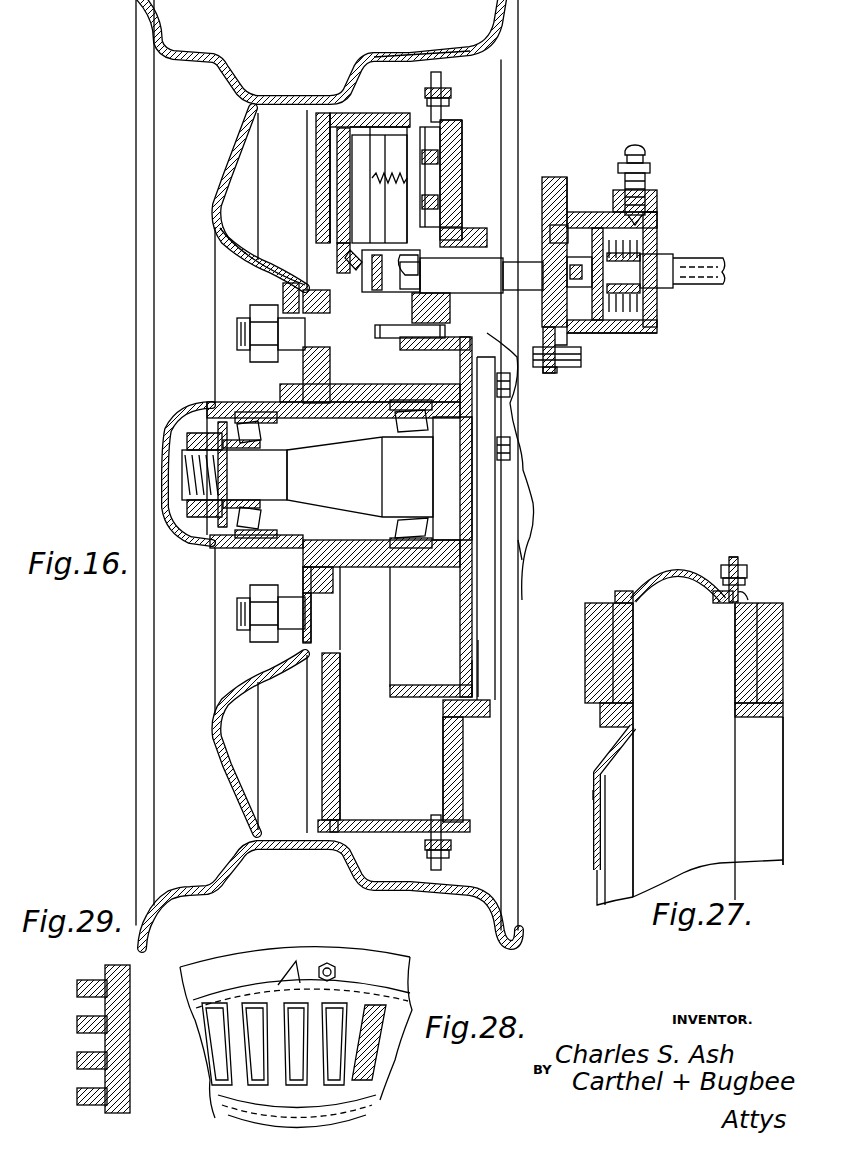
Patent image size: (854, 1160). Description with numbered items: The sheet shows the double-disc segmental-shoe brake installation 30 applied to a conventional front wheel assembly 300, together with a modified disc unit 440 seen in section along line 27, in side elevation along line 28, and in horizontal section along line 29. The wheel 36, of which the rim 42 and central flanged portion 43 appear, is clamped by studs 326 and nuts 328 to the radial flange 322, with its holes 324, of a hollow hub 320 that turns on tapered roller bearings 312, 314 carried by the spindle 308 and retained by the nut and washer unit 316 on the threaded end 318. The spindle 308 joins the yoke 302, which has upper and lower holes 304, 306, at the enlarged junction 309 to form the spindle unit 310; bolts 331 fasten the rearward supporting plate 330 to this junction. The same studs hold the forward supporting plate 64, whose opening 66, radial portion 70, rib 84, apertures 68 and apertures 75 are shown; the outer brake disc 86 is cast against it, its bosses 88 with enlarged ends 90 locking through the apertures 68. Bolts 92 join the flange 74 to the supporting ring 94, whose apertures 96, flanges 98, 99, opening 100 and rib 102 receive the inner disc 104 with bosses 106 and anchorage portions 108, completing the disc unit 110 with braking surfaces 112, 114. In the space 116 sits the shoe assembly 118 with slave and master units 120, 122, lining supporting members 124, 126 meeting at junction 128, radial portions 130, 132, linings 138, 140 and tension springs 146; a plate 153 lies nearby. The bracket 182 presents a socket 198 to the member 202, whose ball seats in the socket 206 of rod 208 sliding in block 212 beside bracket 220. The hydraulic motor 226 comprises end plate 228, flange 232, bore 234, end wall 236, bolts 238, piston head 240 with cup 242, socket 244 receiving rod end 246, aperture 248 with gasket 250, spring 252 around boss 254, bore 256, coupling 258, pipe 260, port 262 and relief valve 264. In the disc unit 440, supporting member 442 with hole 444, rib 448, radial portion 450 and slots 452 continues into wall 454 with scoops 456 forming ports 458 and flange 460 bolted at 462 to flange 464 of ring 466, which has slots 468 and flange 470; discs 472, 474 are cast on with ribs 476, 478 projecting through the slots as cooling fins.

In FIG. 16, the double-disc segmental-shoe vehicle brake installation 30 is at (475, 135).
In FIG. 16, the vehicle wheel 36 is at (221, 183).
In FIG. 16, the rim 42 is at (214, 55).
In FIG. 16, the central flanged apertured portion 43 is at (272, 402).
In FIG. 16, the brake disc supporting plate 64 is at (289, 298).
In FIG. 16, the central opening 66 is at (237, 400).
In FIG. 16, the brake disc securing apertures 68 is at (317, 157).
In FIG. 16, the radial portion 70 is at (318, 190).
In FIG. 16, the radial flange 74 is at (432, 80).
In FIG. 16, the apertures 75 is at (346, 124).
In FIG. 16, the indentation rib 84 is at (258, 268).
In FIG. 16, the outer annular brake disc 86 is at (320, 204).
In FIG. 16, the anchor portions or bosses 88 is at (322, 170).
In FIG. 16, the enlarged outer ends 90 is at (317, 147).
In FIG. 16, the bolts 92 is at (452, 92).
In FIG. 16, the inner annular brake disc supporting ring 94 is at (462, 135).
In FIG. 16, the indented apertures 96 is at (440, 175).
In FIG. 16, the reversely-bent flange 98 is at (462, 230).
In FIG. 16, the inner flange 99 is at (448, 258).
In FIG. 16, the inner opening 100 is at (458, 248).
In FIG. 16, the rib 102 is at (458, 124).
In FIG. 16, the inner annular brake disc 104 is at (462, 123).
In FIG. 16, the bosses 106 is at (455, 185).
In FIG. 16, the enlarged anchorage portions 108 is at (460, 165).
In FIG. 16, the double annular brake disc unit 110 is at (318, 118).
In FIG. 16, the outer braking surface 112 is at (340, 738).
In FIG. 16, the inner braking surface 114 is at (443, 744).
In FIG. 16, the space 116 is at (355, 848).
In FIG. 16, the double segmental brake shoe assembly 118 is at (376, 113).
In FIG. 16, the outer (slave) brake shoe unit 120 is at (326, 118).
In FIG. 16, the inner (master) brake shoe unit 122 is at (466, 110).
In FIG. 16, the outer brake lining supporting member 124 is at (368, 120).
In FIG. 16, the inner brake lining supporting member 126 is at (400, 115).
In FIG. 16, the common junction line 128 is at (379, 193).
In FIG. 16, the radial portion 130 is at (345, 237).
In FIG. 16, the radial portion 132 is at (399, 194).
In FIG. 16, the outer brake lining 138 is at (337, 218).
In FIG. 16, the inner brake lining 140 is at (458, 210).
In FIG. 16, the tension springs 146 is at (388, 185).
In FIG. 16, the plate 153 is at (472, 672).
In FIG. 16, the thrust-receiving arm or forward bracket 182 is at (346, 255).
In FIG. 16, the trough-shaped socket 198 is at (368, 292).
In FIG. 16, the motion-transmitting member 202 is at (409, 265).
In FIG. 16, the hemispherical socket 206 is at (448, 303).
In FIG. 16, the motion-transmitting rod 208 is at (481, 275).
In FIG. 16, the elongated block 212 is at (420, 350).
In FIG. 16, the flanged bracket 220 is at (395, 332).
In FIG. 16, the hydraulic brake-operating motor 226 is at (668, 202).
In FIG. 16, the end plate 228 is at (542, 180).
In FIG. 16, the end flange 232 is at (562, 180).
In FIG. 16, the cylinder bore 234 is at (581, 355).
In FIG. 16, the end wall 236 is at (660, 323).
In FIG. 16, the bolts 238 is at (565, 368).
In FIG. 16, the piston head 240 is at (575, 338).
In FIG. 16, the cup-shaped resilient member 242 is at (648, 226).
In FIG. 16, the socket 244 is at (558, 278).
In FIG. 16, the reduced diameter end 246 is at (563, 272).
In FIG. 16, the aperture 248 is at (539, 350).
In FIG. 16, the resilient gasket 250 is at (545, 233).
In FIG. 16, the helical compression spring 252 is at (646, 240).
In FIG. 16, the tubular boss 254 is at (650, 255).
In FIG. 16, the bore 256 is at (655, 300).
In FIG. 16, the coupling 258 is at (660, 265).
In FIG. 16, the hydraulic pressure fluid service pipe 260 is at (725, 269).
In FIG. 16, the threaded port 262 is at (622, 192).
In FIG. 16, the pressure relief valve 264 is at (646, 168).
In FIG. 16, the front wheel assembly 300 is at (181, 383).
In FIG. 16, the yoke portion 302 is at (523, 0).
In FIG. 16, the upper hole 304 is at (687, 0).
In FIG. 16, the lower hole 306 is at (557, 452).
In FIG. 16, the wheel spindle 308 is at (333, 505).
In FIG. 16, the enlarged junction portion 309 is at (533, 380).
In FIG. 16, the front wheel spindle unit 310 is at (529, 552).
In FIG. 16, the tapered roller bearing assembly 312 is at (392, 427).
In FIG. 16, the tapered roller bearing assembly 314 is at (275, 432).
In FIG. 16, the nut and washer unit 316 is at (190, 542).
In FIG. 16, the threaded end portion 318 is at (212, 463).
In FIG. 16, the hollow tubular hub 320 is at (398, 392).
In FIG. 16, the radial wheel-mounting flange 322 is at (332, 368).
In FIG. 16, the holes 324 is at (322, 640).
In FIG. 16, the bolts or studs 326 is at (238, 340).
In FIG. 16, the nuts 328 is at (256, 318).
In FIG. 16, the rearward flanged brake unit supporting plate 330 is at (470, 640).
In FIG. 16, the bolts 331 is at (512, 385).
In FIG. 27, the double annular brake disc unit 440 is at (740, 548).
In FIG. 27, the brake supporting member 442 is at (585, 786).
In FIG. 27, the wall 444 is at (593, 870).
In FIG. 27, the annular indented rib 448 is at (635, 730).
In FIG. 28, the annular radial peripheral portion 450 is at (395, 1013).
In FIG. 27, the radial slots 452 is at (628, 688).
In FIG. 28, the radial slots 452 is at (380, 1070).
In FIG. 29, the radial slots 452 is at (105, 1085).
In FIG. 27, the toroidal axial peripheral wall 454 is at (618, 595).
In FIG. 28, the toroidal axial peripheral wall 454 is at (395, 963).
In FIG. 27, the air scoops 456 is at (654, 585).
In FIG. 28, the air scoops 456 is at (290, 983).
In FIG. 27, the air inlet ports 458 is at (678, 590).
In FIG. 27, the annular radial flange 460 is at (730, 555).
In FIG. 27, the bolts 462 is at (740, 570).
In FIG. 27, the radial flange 464 is at (742, 583).
In FIG. 27, the brake disc supporting ring 466 is at (754, 603).
In FIG. 27, the radial slots 468 is at (738, 688).
In FIG. 27, the doubled reversely-bent axial flange 470 is at (762, 718).
In FIG. 27, the annular brake disc 472 is at (630, 605).
In FIG. 29, the annular brake disc 472 is at (128, 1070).
In FIG. 27, the annular brake disc 474 is at (735, 614).
In FIG. 27, the radial ribs / fastening and cooling fins 476 is at (598, 710).
In FIG. 29, the radial ribs / fastening and cooling fins 476 is at (80, 990).
In FIG. 27, the radial ribs / fastening and cooling fins 478 is at (783, 718).
In FIG. 28, the section line 27— 27 is at (297, 1135).
In FIG. 27, the section line 28— 28 is at (567, 605).
In FIG. 27, the section line 29— 29 is at (560, 627).